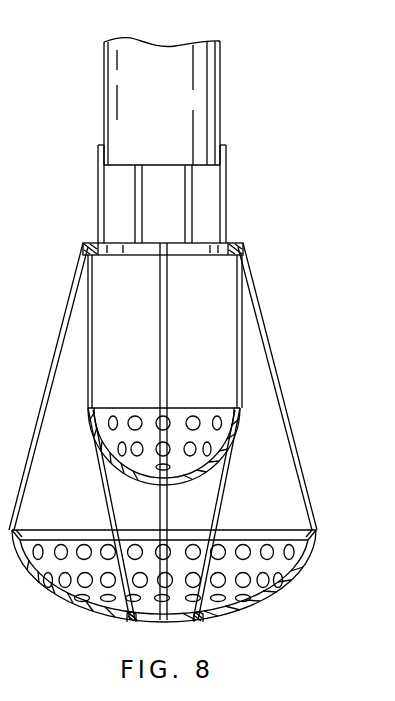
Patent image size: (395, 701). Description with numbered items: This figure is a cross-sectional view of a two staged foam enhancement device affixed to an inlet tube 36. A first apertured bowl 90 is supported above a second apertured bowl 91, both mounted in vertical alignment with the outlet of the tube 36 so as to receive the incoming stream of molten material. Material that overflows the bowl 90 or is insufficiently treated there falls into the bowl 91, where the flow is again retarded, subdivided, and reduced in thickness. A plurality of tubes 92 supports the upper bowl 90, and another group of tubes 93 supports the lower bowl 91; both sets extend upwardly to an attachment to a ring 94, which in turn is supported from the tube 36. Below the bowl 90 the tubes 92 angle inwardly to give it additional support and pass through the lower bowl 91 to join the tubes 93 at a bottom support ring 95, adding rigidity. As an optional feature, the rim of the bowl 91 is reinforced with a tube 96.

The tube 36 is at (222, 118).
The ring 94 is at (232, 243).
The tubes 92 is at (168, 287).
The first apertured bowl 90 is at (176, 407).
The tubes 93 is at (285, 410).
The second apertured bowl 91 is at (232, 543).
The tube 96 is at (43, 533).
The bottom support ring 95 is at (203, 622).